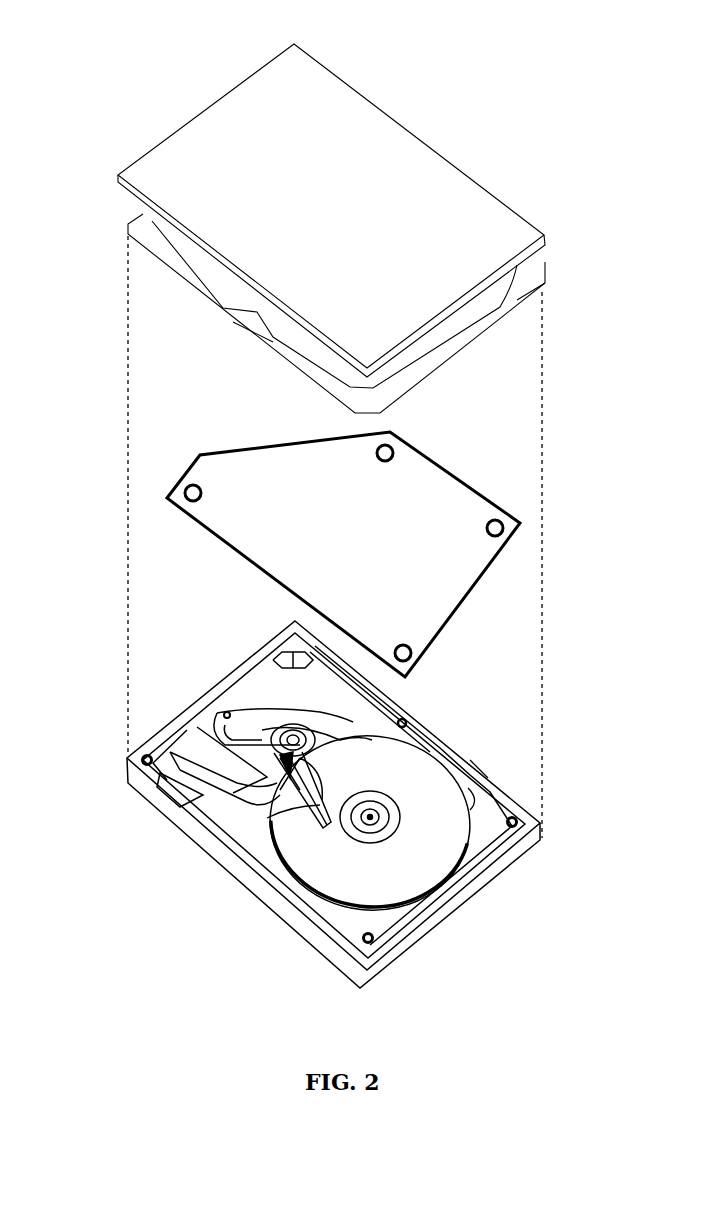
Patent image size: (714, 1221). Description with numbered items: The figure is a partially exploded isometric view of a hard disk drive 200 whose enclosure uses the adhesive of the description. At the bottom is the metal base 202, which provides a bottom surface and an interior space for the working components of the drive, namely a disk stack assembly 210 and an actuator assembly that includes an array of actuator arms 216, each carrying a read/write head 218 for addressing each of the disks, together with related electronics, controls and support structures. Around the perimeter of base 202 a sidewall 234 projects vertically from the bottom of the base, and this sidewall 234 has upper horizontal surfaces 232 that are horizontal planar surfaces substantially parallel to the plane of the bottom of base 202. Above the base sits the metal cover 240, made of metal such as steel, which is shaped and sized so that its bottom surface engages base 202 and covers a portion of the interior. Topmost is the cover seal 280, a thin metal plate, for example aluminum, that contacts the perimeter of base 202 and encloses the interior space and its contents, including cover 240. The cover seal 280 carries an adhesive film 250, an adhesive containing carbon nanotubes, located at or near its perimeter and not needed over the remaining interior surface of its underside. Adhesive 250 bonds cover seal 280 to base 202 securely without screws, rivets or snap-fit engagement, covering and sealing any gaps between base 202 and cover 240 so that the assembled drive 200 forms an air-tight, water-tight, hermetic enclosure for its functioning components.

The disk drive 200 is at (143, 42).
The metal base 202 is at (455, 910).
The disk stack assembly 210 is at (369, 823).
The actuator arms 216 is at (267, 818).
The read/write head 218 is at (297, 789).
The upper horizontal surfaces 232 is at (487, 777).
The sidewall 234 is at (520, 798).
The metal cover 240 is at (433, 492).
The adhesive film 250 is at (240, 322).
The cover seal 280 is at (345, 83).